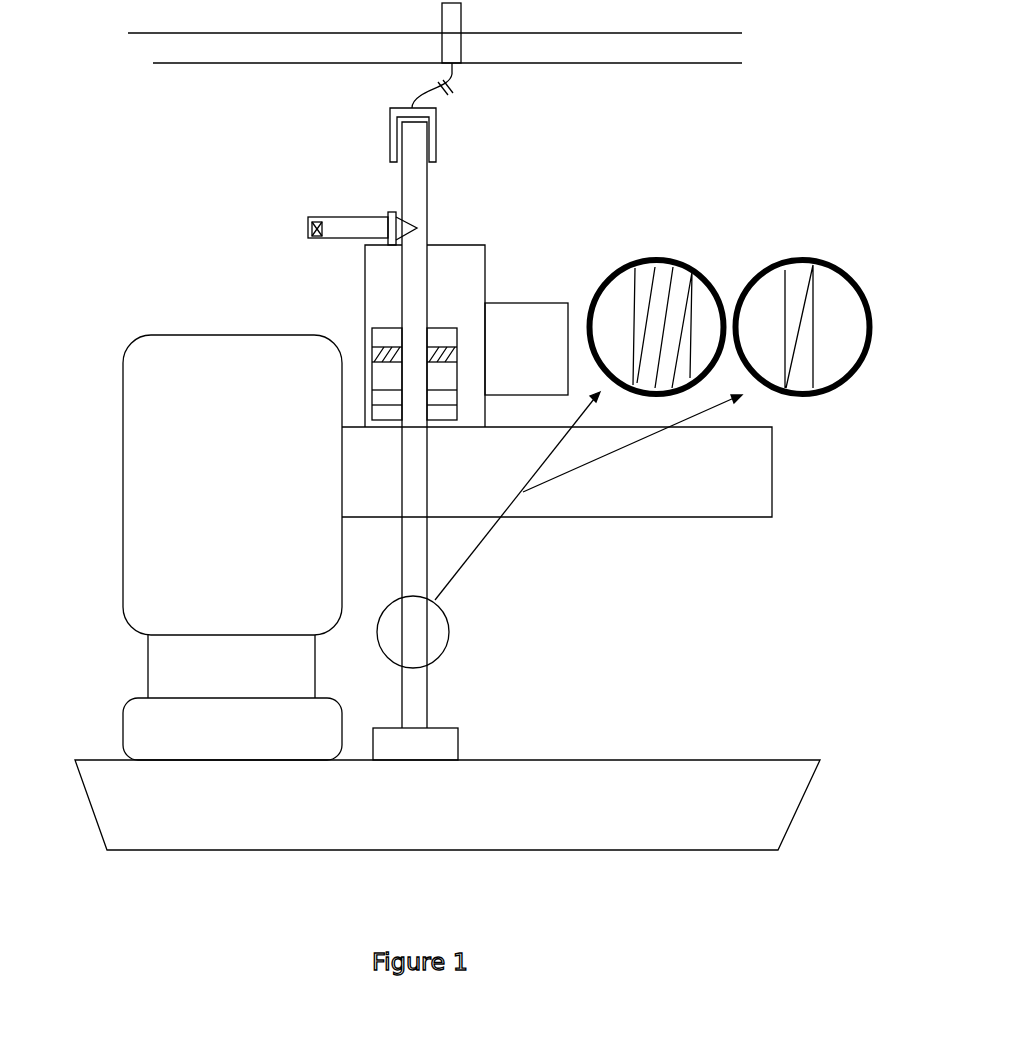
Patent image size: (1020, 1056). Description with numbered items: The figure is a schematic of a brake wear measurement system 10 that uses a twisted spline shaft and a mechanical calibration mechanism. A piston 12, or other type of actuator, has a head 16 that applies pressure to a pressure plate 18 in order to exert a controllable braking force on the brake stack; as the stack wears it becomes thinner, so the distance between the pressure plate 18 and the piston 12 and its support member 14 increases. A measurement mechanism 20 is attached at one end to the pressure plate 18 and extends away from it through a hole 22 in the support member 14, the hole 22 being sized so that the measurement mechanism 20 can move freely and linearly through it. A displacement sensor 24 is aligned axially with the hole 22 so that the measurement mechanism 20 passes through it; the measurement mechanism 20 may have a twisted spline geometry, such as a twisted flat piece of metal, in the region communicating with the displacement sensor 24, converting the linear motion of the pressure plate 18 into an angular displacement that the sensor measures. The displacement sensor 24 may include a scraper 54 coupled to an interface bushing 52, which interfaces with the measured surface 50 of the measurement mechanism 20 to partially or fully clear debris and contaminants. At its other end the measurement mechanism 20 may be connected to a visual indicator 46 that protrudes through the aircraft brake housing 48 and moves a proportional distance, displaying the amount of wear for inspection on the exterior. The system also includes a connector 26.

The brake wear measurement system 10 is at (197, 194).
The piston 12 is at (172, 335).
The support member 14 is at (650, 485).
The head 16 is at (153, 727).
The pressure plate 18 is at (207, 826).
The measurement mechanism 20 is at (417, 200).
The hole 22 is at (400, 487).
The displacement sensor 24 is at (305, 342).
The connector 26 is at (507, 336).
The visual indicator 46 is at (454, 73).
The brake housing 48 is at (648, 48).
The measured surface 50 is at (672, 295).
The interface bushing 52 is at (358, 400).
The scraper 54 is at (370, 354).